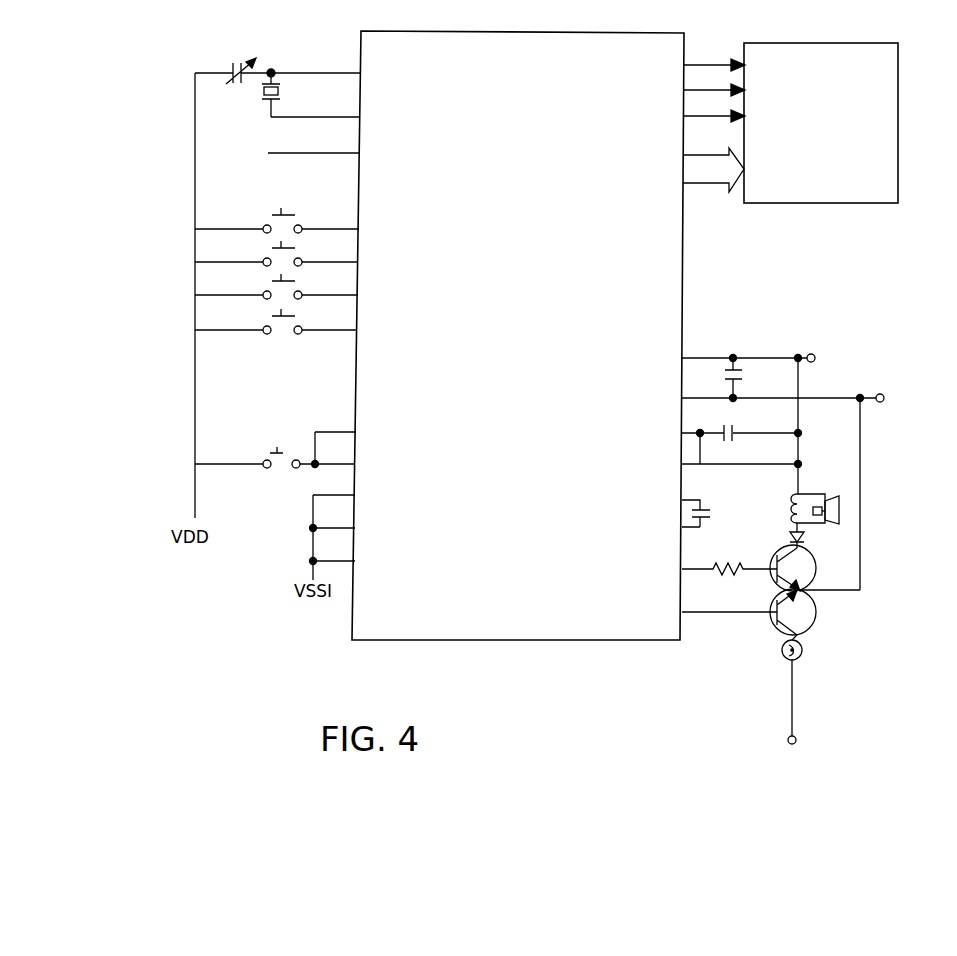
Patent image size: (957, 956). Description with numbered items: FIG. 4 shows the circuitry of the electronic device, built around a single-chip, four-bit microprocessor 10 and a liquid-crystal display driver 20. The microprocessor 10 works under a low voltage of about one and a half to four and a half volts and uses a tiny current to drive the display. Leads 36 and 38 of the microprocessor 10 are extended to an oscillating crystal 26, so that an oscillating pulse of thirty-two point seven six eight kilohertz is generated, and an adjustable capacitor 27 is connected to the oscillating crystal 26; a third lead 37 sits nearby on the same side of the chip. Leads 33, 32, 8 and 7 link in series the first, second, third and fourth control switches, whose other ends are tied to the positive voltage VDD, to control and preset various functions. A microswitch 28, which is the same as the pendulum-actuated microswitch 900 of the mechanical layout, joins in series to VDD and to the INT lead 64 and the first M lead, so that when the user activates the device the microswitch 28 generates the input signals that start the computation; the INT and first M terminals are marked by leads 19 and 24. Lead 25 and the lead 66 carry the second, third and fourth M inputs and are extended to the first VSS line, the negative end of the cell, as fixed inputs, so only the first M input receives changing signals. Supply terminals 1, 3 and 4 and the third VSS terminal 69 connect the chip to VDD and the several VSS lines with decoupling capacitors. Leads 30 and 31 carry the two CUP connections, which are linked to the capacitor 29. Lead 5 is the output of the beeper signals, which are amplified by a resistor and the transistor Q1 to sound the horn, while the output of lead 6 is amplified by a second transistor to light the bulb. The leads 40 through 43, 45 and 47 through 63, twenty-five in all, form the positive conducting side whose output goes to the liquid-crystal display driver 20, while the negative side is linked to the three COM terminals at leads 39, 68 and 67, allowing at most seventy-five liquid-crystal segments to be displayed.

The microprocessor 10 is at (380, 625).
The liquid-crystal display driver 20 is at (898, 121).
The oscillating crystal 26 is at (279, 82).
The adjustable capacitor 27 is at (236, 67).
The microswitch 28 is at (174, 439).
The microswitch 900 is at (272, 456).
The lead 36 is at (278, 61).
The lead 38 is at (315, 105).
The IO PF terminal 37 is at (314, 142).
The lead 33 is at (277, 219).
The lead 32 is at (819, 653).
The lead 8 is at (276, 285).
The lead 7 is at (276, 320).
The INT terminal 19 is at (335, 436).
The M1 terminal 24 is at (327, 454).
The lead 25 is at (334, 525).
The COM1 terminal 39 is at (714, 54).
The COM2 terminal 68 is at (714, 83).
The COM3 terminal 67 is at (714, 107).
The lead 40 is at (733, 236).
The lead 43 is at (735, 244).
The lead 45 is at (737, 266).
The lead 47 is at (738, 308).
The lead 63 is at (737, 317).
The lead 64 is at (699, 221).
The lead 66 is at (702, 232).
The VDD terminal 1 is at (768, 366).
The VSS1 terminal 3 is at (804, 391).
The VSS2 terminal 4 is at (742, 434).
The VSS3 terminal 69 is at (690, 450).
The lead 30 is at (697, 493).
The capacitor 29 is at (711, 513).
The lead 31 is at (805, 490).
The lead 5 is at (729, 559).
The lead 6 is at (749, 612).
The transistor Q1 is at (811, 537).